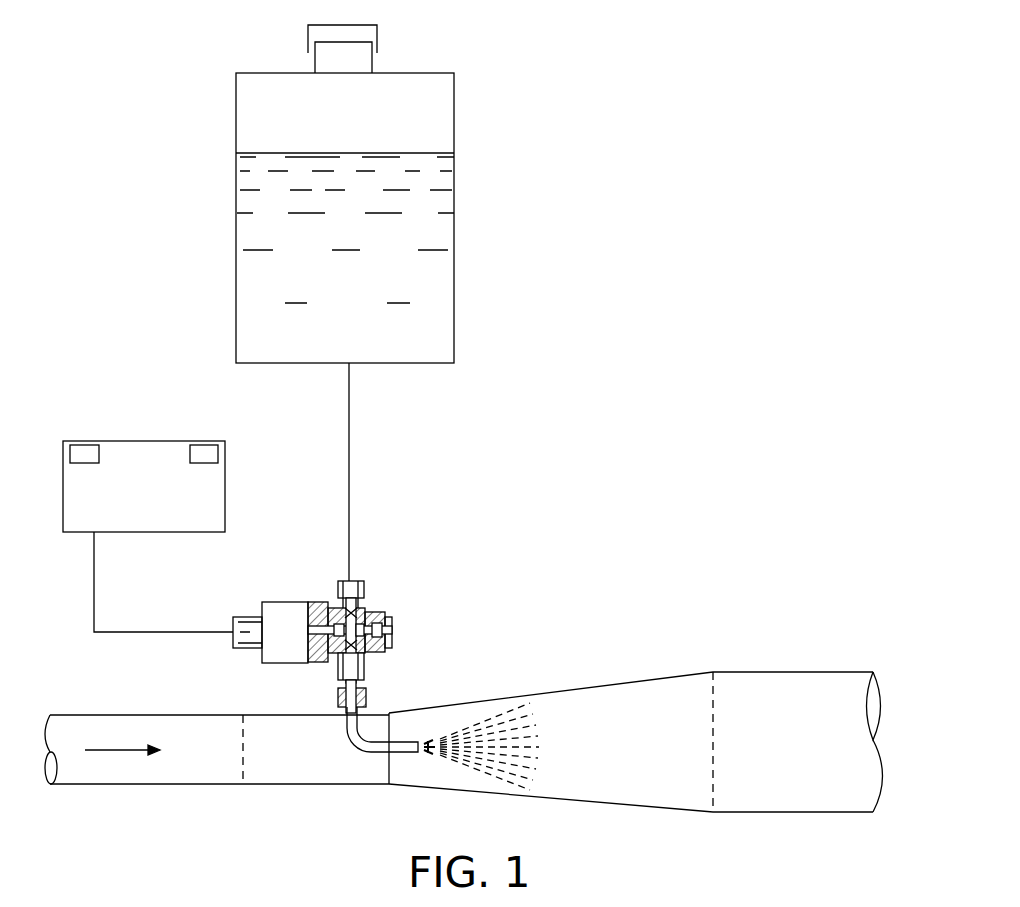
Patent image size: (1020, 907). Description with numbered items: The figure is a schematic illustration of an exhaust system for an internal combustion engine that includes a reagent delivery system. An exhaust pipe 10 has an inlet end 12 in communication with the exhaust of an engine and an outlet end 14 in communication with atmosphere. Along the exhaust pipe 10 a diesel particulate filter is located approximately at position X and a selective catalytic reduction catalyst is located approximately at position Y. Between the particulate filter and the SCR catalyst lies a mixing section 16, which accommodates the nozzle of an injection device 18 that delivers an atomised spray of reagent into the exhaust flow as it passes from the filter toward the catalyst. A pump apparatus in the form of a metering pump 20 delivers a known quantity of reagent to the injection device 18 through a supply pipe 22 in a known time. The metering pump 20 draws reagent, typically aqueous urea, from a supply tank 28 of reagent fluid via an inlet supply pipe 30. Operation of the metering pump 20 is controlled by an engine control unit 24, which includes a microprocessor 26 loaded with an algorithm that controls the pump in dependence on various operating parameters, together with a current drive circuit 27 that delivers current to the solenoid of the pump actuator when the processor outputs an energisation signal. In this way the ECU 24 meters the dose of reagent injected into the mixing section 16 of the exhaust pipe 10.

The exhaust pipe 10 is at (464, 762).
The inlet end 12 is at (93, 776).
The outlet end 14 is at (814, 800).
The mixing section 16 is at (405, 775).
The injection device 18 is at (399, 738).
The metering pump 20 is at (400, 608).
The supply pipe 22 is at (349, 720).
The engine control unit 24 is at (226, 480).
The microprocessor 26 is at (80, 444).
The current drive circuit 27 is at (206, 444).
The supply tank 28 is at (455, 80).
The inlet supply pipe 30 is at (350, 434).